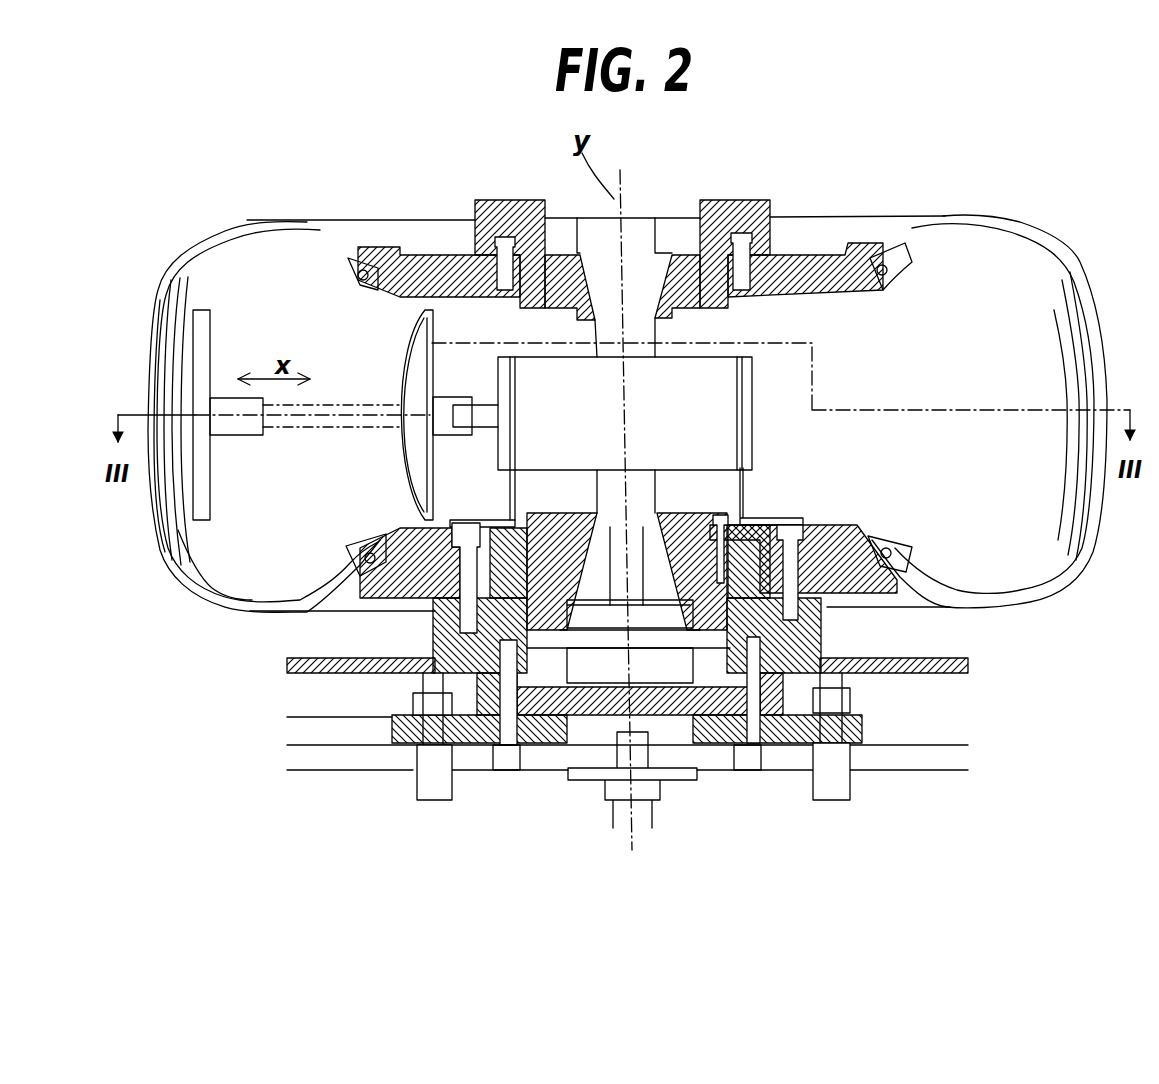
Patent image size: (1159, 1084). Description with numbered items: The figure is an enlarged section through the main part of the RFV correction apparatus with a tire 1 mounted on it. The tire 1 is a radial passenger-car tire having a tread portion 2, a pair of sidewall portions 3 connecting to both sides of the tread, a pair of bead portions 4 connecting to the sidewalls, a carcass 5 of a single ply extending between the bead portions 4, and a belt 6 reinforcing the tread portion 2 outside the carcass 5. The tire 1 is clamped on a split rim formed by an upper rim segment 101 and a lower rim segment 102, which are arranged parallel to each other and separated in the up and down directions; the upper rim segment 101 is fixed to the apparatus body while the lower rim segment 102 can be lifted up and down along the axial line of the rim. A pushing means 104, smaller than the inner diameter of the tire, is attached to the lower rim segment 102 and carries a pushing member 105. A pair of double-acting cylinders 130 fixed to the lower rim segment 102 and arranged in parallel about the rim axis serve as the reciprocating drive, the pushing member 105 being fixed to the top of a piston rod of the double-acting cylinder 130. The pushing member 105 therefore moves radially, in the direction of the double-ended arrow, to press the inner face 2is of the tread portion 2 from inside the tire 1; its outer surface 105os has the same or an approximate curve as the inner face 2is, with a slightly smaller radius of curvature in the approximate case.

The tire 1 is at (240, 214).
The tread portion 2 is at (149, 372).
The inner face of the tread portion 2is is at (196, 462).
The sidewall portions 3 is at (309, 217).
The bead portions 4 is at (361, 291).
The carcass 5 is at (233, 583).
The belt 6 is at (176, 533).
The upper rim segment 101 is at (443, 248).
The lower rim segment 102 is at (388, 596).
The pushing means 104 is at (638, 352).
The pushing member 105 is at (413, 388).
The outer surface of the pushing member 105os is at (398, 433).
The double-acting cylinders 130 is at (733, 386).